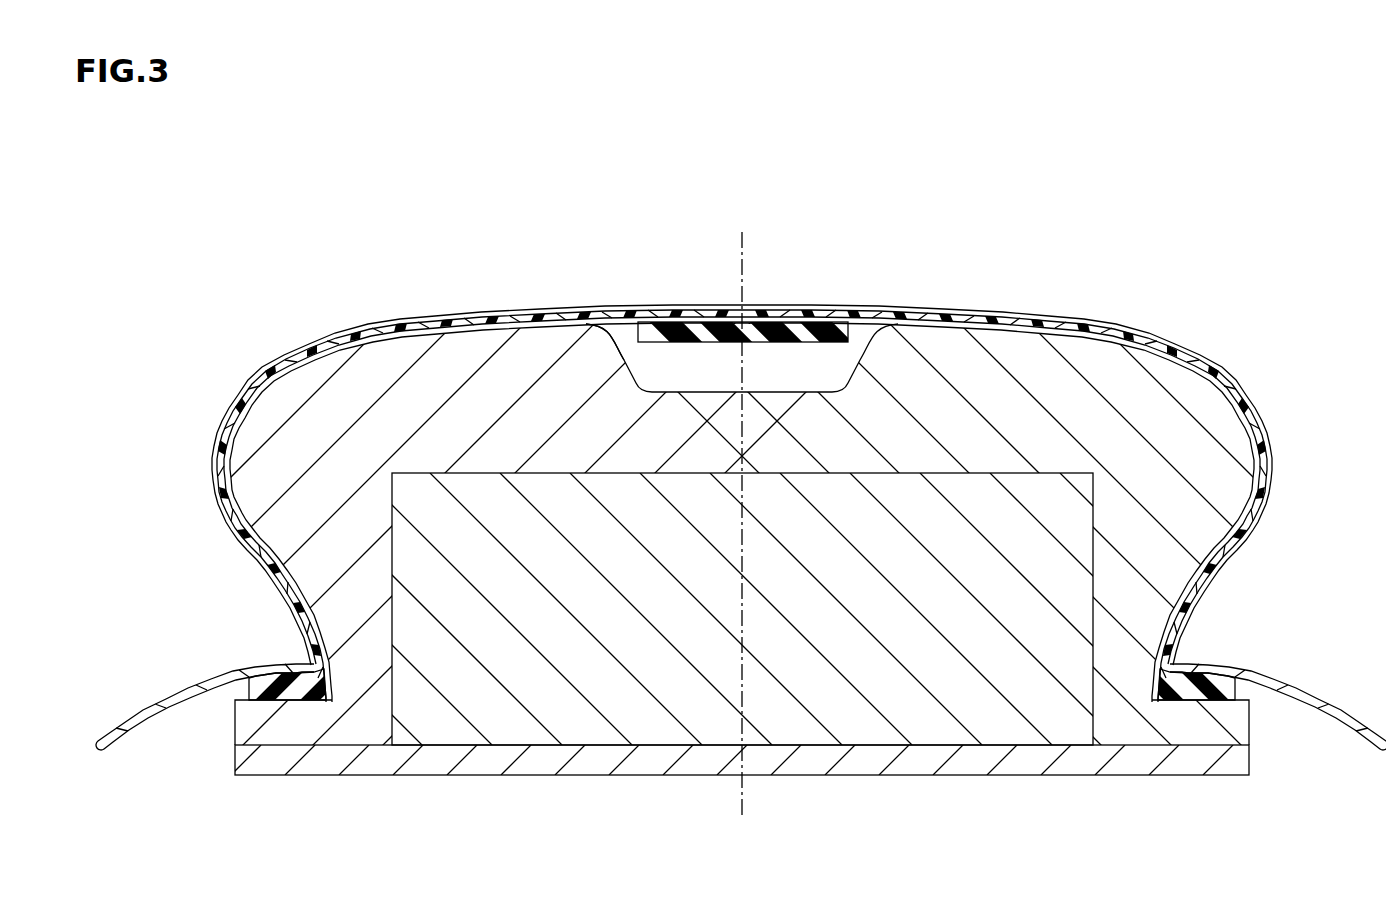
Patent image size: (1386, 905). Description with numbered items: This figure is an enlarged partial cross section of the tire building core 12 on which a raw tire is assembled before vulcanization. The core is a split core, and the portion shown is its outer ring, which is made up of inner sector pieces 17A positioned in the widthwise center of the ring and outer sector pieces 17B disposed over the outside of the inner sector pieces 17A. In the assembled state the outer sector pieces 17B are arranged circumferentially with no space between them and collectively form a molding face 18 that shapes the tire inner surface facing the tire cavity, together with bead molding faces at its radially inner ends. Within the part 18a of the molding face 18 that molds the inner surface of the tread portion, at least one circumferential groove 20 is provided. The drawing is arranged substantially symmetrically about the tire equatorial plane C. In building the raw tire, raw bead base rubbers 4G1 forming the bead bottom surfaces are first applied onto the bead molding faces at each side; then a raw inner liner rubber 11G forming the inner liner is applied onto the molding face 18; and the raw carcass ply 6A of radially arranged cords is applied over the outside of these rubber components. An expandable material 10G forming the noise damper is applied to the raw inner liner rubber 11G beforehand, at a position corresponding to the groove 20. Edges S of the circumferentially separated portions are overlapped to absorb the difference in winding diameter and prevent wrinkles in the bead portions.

The carcass ply 6A is at (1115, 307).
The molding face 18 is at (1266, 422).
The part of the molding face 18a is at (937, 322).
The raw inner liner rubber 11G is at (1045, 327).
The expandable material 10G is at (825, 327).
The circumferential groove 20 is at (626, 338).
The edges S is at (672, 360).
The tire equatorial plane C is at (743, 509).
The tire building core 12 is at (610, 694).
The inner sector pieces 17A is at (913, 708).
The outer sector pieces 17B is at (285, 394).
The raw bead base rubbers 4G1 is at (268, 680).